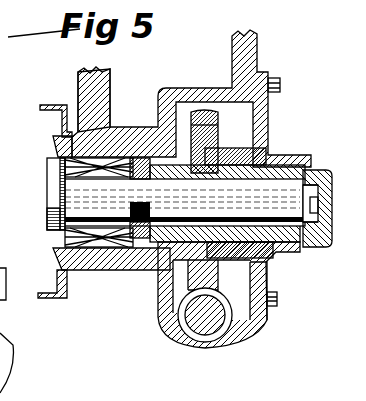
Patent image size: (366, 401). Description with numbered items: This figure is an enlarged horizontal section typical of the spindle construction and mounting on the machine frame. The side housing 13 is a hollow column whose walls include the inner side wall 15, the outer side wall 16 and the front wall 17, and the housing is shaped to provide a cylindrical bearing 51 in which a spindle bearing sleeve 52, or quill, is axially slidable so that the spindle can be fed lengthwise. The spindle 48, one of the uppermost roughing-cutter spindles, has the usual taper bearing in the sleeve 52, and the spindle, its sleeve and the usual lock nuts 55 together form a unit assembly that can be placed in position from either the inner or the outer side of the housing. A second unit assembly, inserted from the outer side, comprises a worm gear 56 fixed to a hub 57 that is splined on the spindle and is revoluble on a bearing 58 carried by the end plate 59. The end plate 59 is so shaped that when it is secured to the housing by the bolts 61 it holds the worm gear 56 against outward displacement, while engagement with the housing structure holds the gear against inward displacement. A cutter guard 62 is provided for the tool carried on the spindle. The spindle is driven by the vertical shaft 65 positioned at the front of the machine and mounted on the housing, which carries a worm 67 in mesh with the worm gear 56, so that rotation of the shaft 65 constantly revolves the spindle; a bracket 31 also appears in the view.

The side housing 13 is at (90, 270).
The inner side wall 15 is at (78, 82).
The outer side wall 16 is at (246, 38).
The front wall 17 is at (122, 258).
The bracket 31 is at (5, 268).
The spindle 48 is at (68, 197).
The cylindrical bearing 51 is at (170, 267).
The spindle bearing sleeve 52 is at (107, 172).
The lock nuts 55 is at (150, 180).
The worm gear 56 is at (216, 125).
The hub 57 is at (283, 175).
The bearing 58 is at (276, 252).
The end plate 59 is at (266, 272).
The bolts 61 is at (278, 300).
The cutter guard 62 is at (47, 294).
The vertical shaft 65 is at (208, 332).
The worm 67 is at (177, 328).